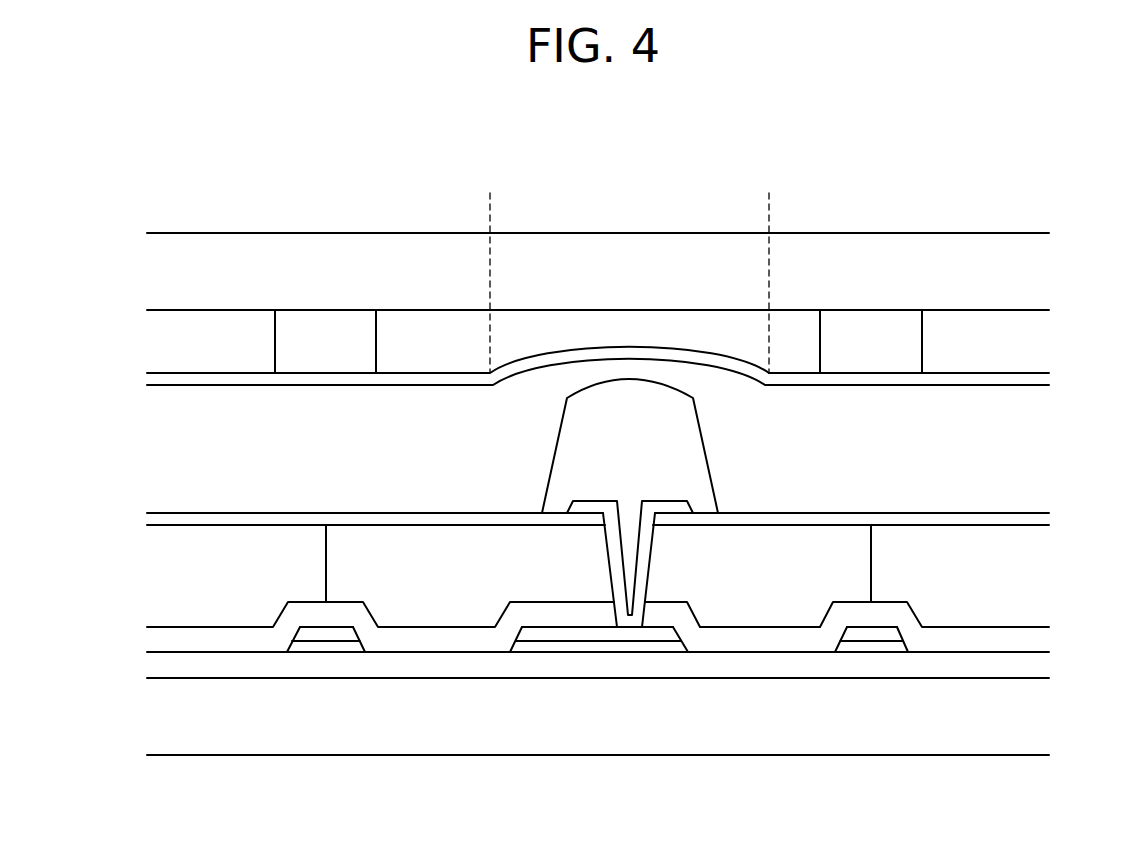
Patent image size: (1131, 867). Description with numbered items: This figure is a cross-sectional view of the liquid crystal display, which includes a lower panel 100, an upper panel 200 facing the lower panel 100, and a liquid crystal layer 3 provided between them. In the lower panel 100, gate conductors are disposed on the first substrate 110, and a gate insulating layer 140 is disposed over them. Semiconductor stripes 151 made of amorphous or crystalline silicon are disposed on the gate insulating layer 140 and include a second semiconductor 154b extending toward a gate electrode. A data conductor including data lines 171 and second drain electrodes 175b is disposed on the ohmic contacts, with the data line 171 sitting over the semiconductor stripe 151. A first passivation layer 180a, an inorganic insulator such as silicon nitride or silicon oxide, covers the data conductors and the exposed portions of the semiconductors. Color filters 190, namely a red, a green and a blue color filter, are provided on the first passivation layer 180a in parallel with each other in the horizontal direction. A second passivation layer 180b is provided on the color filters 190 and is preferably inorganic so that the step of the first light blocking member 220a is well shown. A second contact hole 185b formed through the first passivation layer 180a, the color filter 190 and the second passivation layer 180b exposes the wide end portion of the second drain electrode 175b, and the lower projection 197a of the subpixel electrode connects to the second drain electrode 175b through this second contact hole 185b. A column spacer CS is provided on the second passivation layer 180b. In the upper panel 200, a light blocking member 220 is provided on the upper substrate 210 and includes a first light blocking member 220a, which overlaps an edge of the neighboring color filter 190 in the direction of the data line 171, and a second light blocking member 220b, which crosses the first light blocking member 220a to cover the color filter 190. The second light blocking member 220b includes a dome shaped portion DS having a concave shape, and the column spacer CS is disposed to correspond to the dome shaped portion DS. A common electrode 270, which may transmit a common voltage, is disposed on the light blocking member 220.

The upper panel 200 is at (599, 268).
The upper substrate 210 is at (160, 275).
The light blocking member 220 is at (787, 177).
The first light blocking member 220a is at (868, 327).
The second light blocking member 220b is at (792, 327).
The common electrode 270 is at (160, 378).
The liquid crystal layer 3 is at (819, 446).
The column spacer CS is at (683, 433).
The dome shaped portion DS is at (490, 208).
The lower panel 100 is at (593, 625).
The first substrate 110 is at (160, 717).
The gate insulating layer 140 is at (160, 667).
The semiconductor stripes 151 is at (315, 647).
The data line 171 is at (333, 633).
The second semiconductor 154b is at (553, 647).
The second drain electrode 175b is at (606, 633).
The first passivation layer 180a is at (160, 638).
The color filters 190 is at (160, 578).
The second passivation layer 180b is at (160, 516).
The second contact hole 185b is at (631, 523).
The lower projection 197a is at (585, 507).